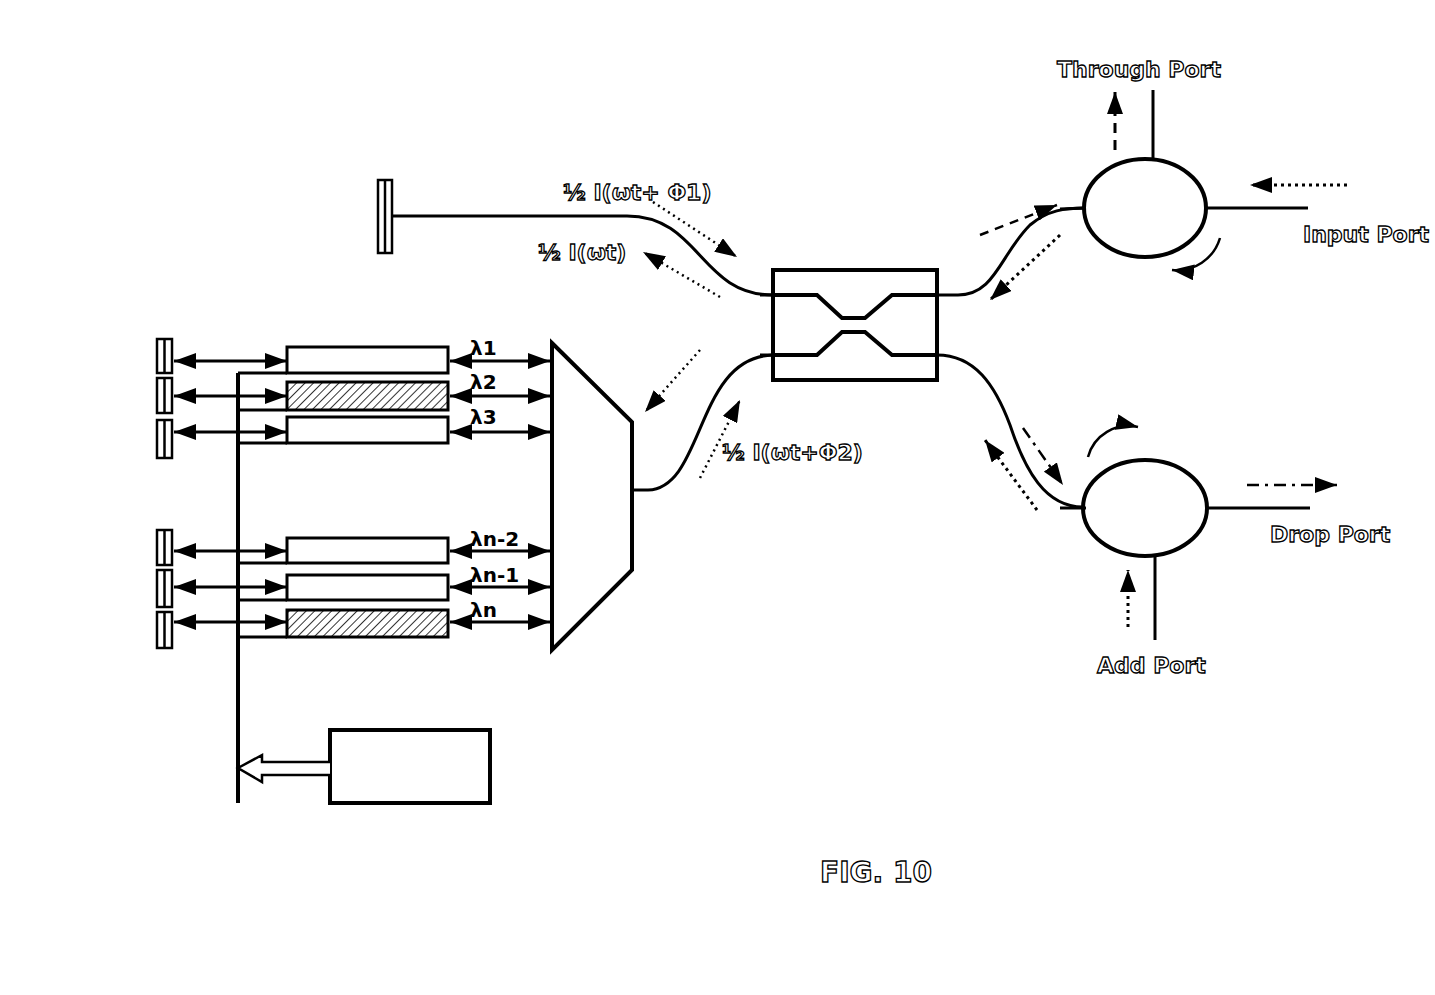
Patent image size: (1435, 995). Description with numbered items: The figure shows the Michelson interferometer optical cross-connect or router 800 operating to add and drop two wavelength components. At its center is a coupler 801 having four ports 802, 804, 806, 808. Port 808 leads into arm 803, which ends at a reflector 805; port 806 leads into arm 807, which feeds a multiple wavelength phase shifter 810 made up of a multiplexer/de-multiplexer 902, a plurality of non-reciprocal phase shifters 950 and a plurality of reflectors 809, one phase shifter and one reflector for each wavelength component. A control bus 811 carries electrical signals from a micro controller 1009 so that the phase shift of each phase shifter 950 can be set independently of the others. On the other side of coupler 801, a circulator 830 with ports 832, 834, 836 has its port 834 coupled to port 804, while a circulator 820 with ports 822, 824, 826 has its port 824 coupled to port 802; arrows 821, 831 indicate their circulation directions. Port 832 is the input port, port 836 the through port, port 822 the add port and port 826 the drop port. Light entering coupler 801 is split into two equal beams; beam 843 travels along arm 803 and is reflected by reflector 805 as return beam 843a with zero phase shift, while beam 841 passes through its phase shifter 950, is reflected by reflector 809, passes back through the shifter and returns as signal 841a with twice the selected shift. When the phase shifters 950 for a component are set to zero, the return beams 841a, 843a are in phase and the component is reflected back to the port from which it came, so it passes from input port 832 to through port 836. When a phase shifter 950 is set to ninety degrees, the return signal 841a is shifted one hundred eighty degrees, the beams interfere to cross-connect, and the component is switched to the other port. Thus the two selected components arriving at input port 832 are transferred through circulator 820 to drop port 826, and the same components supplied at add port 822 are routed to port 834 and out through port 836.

The optical cross-connect or router 800 is at (876, 531).
The coupler 801 is at (888, 295).
The coupler port 802 is at (940, 355).
The arm 803 is at (462, 215).
The coupler port 804 is at (945, 290).
The reflector 805 is at (393, 205).
The coupler port 806 is at (772, 358).
The arm 807 is at (645, 492).
The coupler port 808 is at (772, 287).
The reflectors 809 is at (185, 327).
The multiple wavelength phase shifter 810 is at (660, 622).
The control bus 811 is at (242, 730).
The circulator 820 is at (1153, 530).
The circulation direction arrow 821 is at (1113, 430).
The add port 822 is at (1155, 557).
The circulator port 824 is at (1085, 510).
The drop port 826 is at (1208, 503).
The circulator 830 is at (1138, 223).
The circulation direction arrow 831 is at (1212, 258).
The input port 832 is at (1220, 207).
The circulator port 834 is at (1085, 203).
The through port 836 is at (1153, 160).
The light beam 841 is at (690, 372).
The return signal 841a is at (733, 418).
The light beam 843 is at (680, 273).
The return beam 843a is at (708, 237).
The multiplexer/de-multiplexer 902 is at (580, 597).
The non-reciprocal phase shifters 950 is at (445, 325).
The micro controller 1009 is at (475, 765).